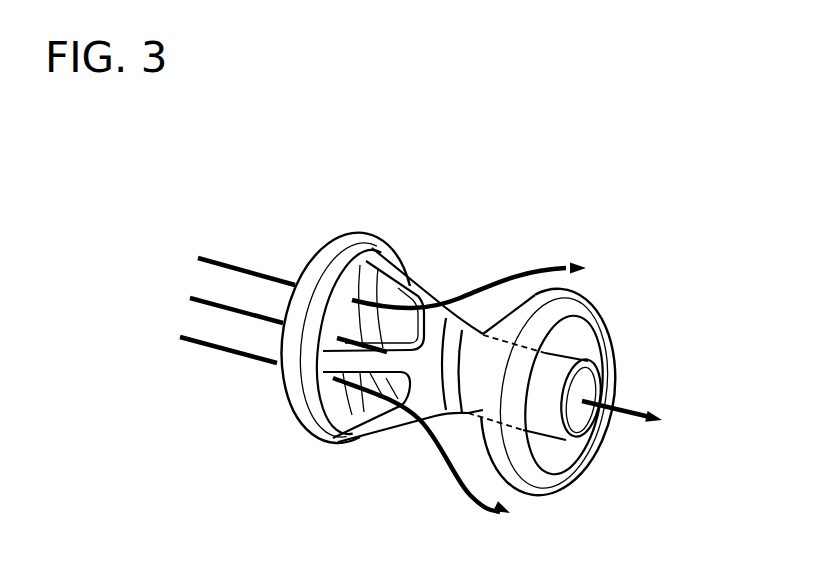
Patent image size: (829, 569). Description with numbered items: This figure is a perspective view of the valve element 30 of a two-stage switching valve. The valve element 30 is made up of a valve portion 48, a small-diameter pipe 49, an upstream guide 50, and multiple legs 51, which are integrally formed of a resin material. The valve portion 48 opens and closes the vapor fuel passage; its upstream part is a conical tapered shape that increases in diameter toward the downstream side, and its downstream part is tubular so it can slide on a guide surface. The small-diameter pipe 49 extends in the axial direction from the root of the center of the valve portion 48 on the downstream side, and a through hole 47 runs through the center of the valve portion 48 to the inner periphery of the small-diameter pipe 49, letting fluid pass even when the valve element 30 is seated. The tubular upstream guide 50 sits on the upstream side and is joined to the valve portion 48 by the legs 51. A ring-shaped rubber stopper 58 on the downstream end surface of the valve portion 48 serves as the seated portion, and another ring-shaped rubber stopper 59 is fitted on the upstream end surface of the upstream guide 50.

The valve element 30 is at (494, 184).
The through hole 47 is at (577, 420).
The valve portion 48 is at (503, 317).
The small-diameter pipe 49 is at (567, 355).
The upstream guide 50 is at (341, 268).
The legs 51 is at (413, 288).
The rubber stopper 58 is at (590, 310).
The rubber stopper 59 is at (316, 266).